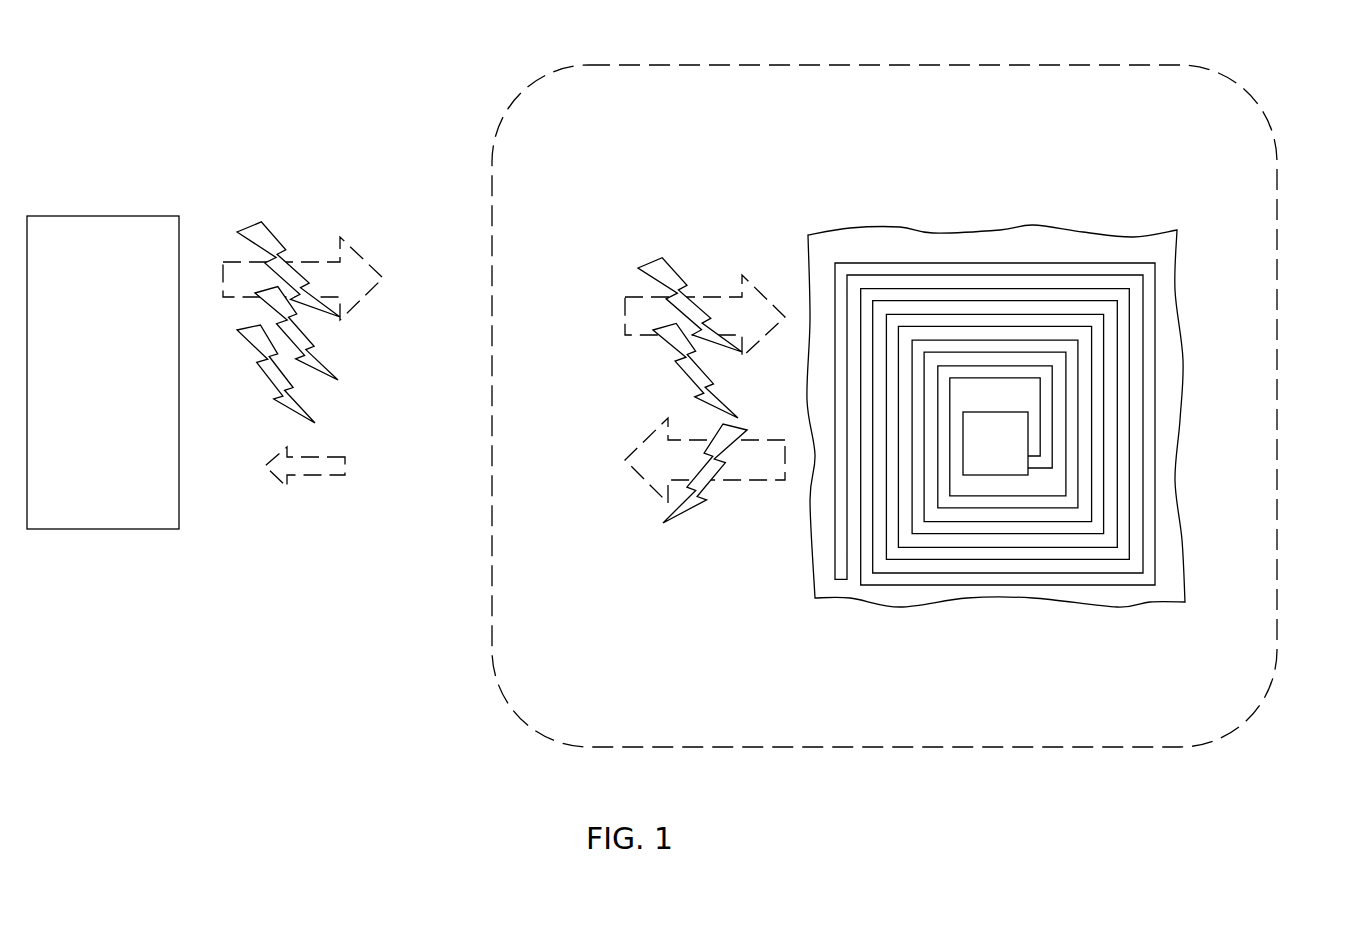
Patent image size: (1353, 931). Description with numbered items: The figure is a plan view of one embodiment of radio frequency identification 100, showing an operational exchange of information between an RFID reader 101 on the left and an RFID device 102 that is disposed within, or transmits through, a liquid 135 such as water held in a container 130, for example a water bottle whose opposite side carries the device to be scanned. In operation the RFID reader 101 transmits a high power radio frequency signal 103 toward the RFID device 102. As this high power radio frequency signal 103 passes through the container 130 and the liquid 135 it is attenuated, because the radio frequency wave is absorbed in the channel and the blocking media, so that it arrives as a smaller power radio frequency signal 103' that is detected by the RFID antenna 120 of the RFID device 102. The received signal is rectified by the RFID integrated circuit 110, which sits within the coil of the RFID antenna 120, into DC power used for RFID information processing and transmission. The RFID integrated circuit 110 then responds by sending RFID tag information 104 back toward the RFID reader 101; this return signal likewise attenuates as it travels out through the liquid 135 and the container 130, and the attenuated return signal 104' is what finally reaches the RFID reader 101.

The radio frequency identification 100 is at (112, 94).
The RFID reader 101 is at (82, 478).
The RFID device 102 is at (1062, 222).
The high power radio frequency signal 103 is at (303, 290).
The smaller power radio frequency signal 103' is at (705, 310).
The RFID tag information 104 is at (666, 467).
The response signal received at reader 104' is at (311, 504).
The RFID integrated circuit 110 is at (1017, 458).
The RFID antenna 120 is at (1157, 540).
The container 130 is at (917, 748).
The liquid 135 is at (1158, 720).